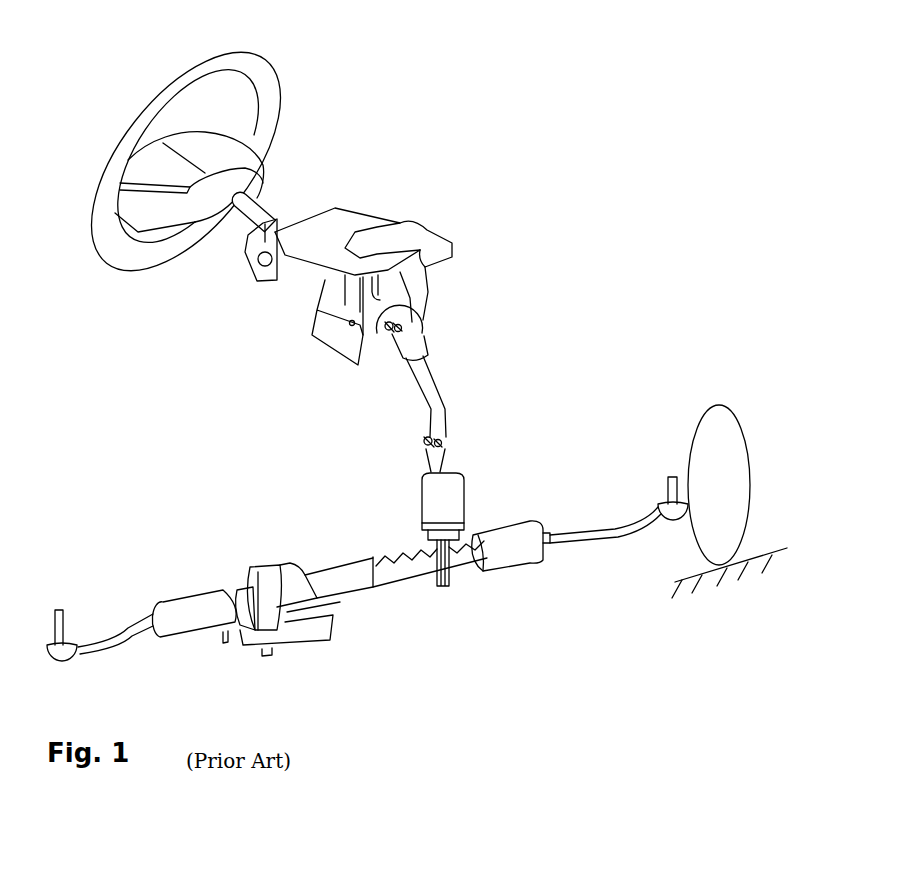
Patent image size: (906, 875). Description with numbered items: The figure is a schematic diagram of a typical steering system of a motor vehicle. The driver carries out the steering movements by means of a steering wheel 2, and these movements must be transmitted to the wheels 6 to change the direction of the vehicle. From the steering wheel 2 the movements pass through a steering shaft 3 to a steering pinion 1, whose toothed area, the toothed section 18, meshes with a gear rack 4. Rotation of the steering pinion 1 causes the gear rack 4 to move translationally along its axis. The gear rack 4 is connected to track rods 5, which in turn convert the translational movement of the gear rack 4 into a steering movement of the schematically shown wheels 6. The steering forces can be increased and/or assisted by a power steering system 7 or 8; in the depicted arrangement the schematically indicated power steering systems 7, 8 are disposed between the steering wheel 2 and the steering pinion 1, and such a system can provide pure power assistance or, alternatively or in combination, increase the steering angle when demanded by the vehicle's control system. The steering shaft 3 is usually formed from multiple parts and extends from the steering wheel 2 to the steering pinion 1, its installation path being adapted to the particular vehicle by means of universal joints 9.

The steering pinion 1 is at (448, 555).
The steering wheel 2 is at (268, 87).
The steering shaft 3 is at (253, 210).
The gear rack 4 is at (385, 570).
The track rods 5 is at (593, 540).
The wheels 6 is at (722, 423).
The power steering system 7 is at (387, 297).
The power steering system 8 is at (450, 507).
The universal joints 9 is at (407, 327).
The toothed section 18 is at (438, 587).